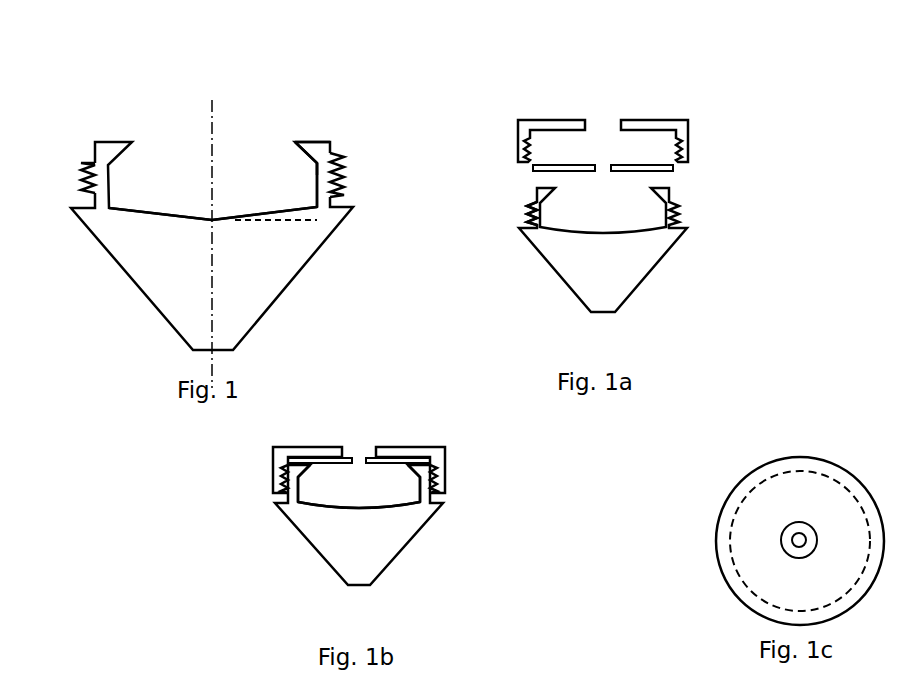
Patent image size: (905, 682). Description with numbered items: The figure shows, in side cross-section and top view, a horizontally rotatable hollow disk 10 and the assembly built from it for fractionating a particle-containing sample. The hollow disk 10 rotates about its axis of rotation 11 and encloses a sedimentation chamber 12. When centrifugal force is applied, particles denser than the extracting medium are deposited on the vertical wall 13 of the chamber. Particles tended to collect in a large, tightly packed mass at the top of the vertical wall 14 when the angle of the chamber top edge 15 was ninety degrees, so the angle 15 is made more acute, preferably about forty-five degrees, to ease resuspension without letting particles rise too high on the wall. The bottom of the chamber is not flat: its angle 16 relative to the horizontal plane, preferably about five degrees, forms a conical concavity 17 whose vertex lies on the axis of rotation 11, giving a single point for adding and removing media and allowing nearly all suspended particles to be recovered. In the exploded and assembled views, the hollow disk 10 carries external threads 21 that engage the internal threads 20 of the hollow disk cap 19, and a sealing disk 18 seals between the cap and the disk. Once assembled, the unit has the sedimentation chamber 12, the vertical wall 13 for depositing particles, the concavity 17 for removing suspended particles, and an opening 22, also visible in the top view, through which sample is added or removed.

In FIG. 1, the horizontally rotatable hollow disk 10 is at (114, 281).
In FIG. 1A, the horizontally rotatable hollow disk 10 is at (657, 286).
In FIG. 1B, the horizontally rotatable hollow disk 10 is at (406, 559).
In FIG. 1, the axis of rotation 11 is at (211, 117).
In FIG. 1, the sedimentation chamber 12 is at (121, 184).
In FIG. 1B, the sedimentation chamber 12 is at (330, 482).
In FIG. 1, the vertical wall 13 is at (320, 174).
In FIG. 1B, the vertical wall 13 is at (417, 496).
In FIG. 1, the top of the vertical wall 14 is at (314, 169).
In FIG. 1, the angle of the chamber top edge 15 is at (308, 147).
In FIG. 1, the angle of the bottom of the sedimentation chamber 16 is at (318, 211).
In FIG. 1, the conical concavity 17 is at (209, 216).
In FIG. 1B, the conical concavity 17 is at (354, 511).
In FIG. 1A, the sealing disk 18 is at (562, 162).
In FIG. 1A, the hollow disk cap 19 is at (658, 122).
In FIG. 1A, the internal threads 20 is at (519, 145).
In FIG. 1A, the external threads 21 is at (529, 210).
In FIG. 1B, the opening 22 is at (363, 456).
In FIG. 1C, the opening 22 is at (796, 543).